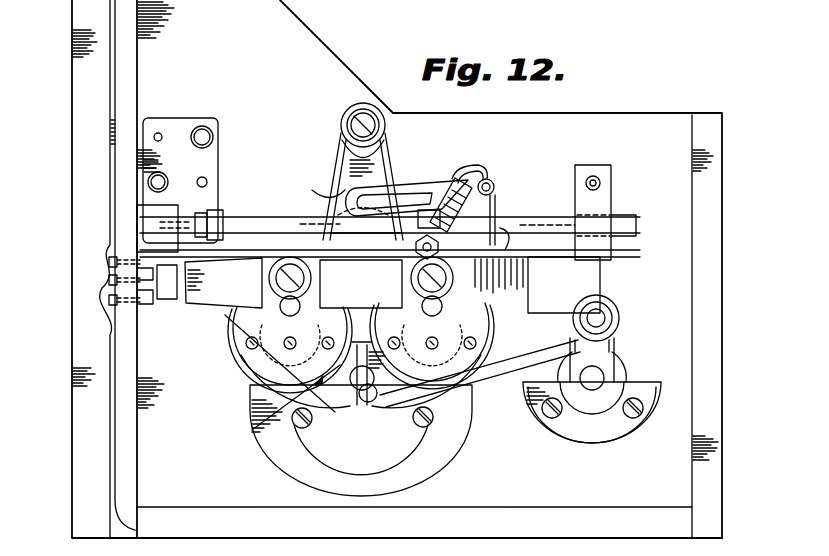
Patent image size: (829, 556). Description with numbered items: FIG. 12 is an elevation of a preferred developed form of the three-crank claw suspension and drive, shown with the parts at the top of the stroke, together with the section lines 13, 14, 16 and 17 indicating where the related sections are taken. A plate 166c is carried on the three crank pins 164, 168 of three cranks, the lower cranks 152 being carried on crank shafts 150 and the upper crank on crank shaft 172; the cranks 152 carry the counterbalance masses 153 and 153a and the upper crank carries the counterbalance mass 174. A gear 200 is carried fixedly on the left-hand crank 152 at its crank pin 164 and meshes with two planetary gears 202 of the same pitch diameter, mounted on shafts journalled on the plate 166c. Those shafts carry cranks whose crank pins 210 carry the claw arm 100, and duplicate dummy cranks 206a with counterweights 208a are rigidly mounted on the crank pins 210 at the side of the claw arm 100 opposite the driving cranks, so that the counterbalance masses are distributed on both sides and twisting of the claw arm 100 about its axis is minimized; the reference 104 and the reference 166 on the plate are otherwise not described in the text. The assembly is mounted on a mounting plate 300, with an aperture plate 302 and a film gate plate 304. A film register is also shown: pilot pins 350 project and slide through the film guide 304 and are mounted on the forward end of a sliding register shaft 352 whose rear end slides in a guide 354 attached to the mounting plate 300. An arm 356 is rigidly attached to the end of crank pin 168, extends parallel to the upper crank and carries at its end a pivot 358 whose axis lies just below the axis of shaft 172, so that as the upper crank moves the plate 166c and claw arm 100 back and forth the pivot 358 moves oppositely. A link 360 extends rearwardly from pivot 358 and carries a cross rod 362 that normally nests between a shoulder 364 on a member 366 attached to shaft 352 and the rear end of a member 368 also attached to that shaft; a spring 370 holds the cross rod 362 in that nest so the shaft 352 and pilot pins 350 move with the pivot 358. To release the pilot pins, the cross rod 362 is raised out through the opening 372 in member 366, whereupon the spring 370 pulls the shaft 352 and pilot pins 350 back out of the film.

The section line 13 is at (750, 252).
The section line 14 is at (592, 262).
The section line 16 is at (45, 293).
The section line 17 is at (362, 100).
The claw arm 100 is at (205, 306).
The ratchet wheel 104 is at (262, 340).
The crank shaft 150 is at (370, 418).
The crank 152 is at (606, 349).
The counterbalance mass 153 is at (617, 428).
The counterbalance mass 153a is at (372, 477).
The crank pin 164 is at (612, 318).
The arm 166 is at (256, 426).
The plate 166c is at (328, 138).
The crank pin 168 is at (352, 113).
The crank shaft 172 is at (380, 180).
The counterbalance mass 174 is at (312, 186).
The gear 200 is at (355, 275).
The planetary gear 202 is at (240, 385).
The dummy crank 206a is at (302, 304).
The counterweight 208a is at (228, 341).
The crank pin 210 is at (270, 279).
The mounting plate 300 is at (236, 75).
The aperture plate 302 is at (96, 171).
The film gate plate 304 is at (118, 410).
The pilot pin 350 is at (160, 222).
The register shaft 352 is at (250, 217).
The guide 354 is at (608, 200).
The arm 356 is at (365, 165).
The pivot 358 is at (365, 223).
The link 360 is at (470, 163).
The cross rod 362 is at (494, 186).
The shoulder 364 is at (500, 203).
The member 366 is at (518, 239).
The member 368 is at (407, 198).
The spring 370 is at (448, 218).
The opening 372 is at (492, 176).